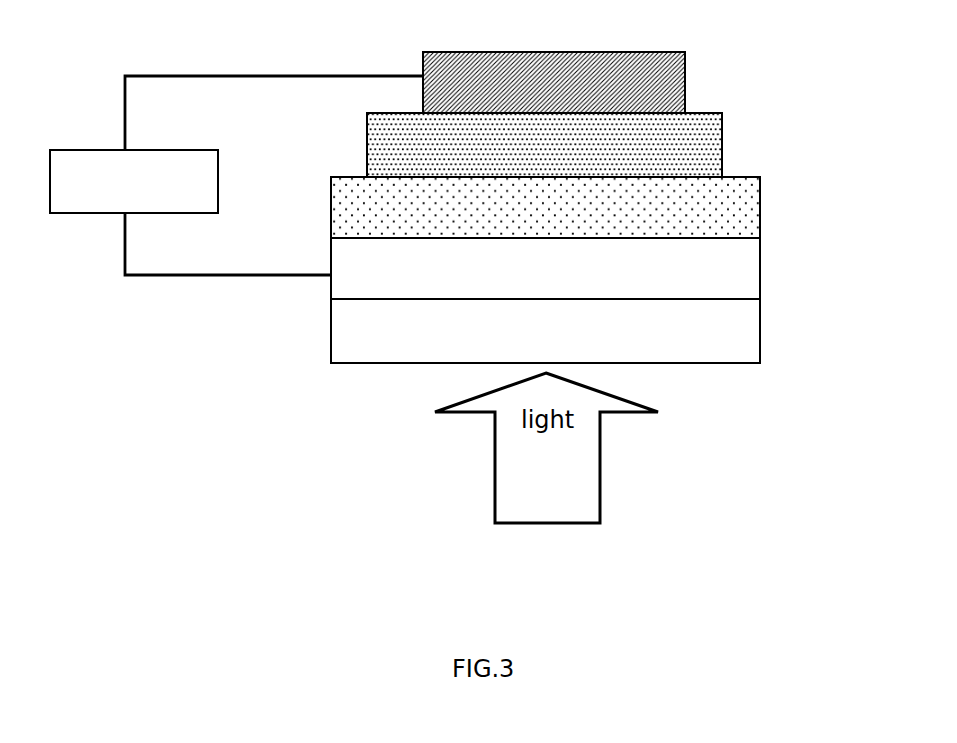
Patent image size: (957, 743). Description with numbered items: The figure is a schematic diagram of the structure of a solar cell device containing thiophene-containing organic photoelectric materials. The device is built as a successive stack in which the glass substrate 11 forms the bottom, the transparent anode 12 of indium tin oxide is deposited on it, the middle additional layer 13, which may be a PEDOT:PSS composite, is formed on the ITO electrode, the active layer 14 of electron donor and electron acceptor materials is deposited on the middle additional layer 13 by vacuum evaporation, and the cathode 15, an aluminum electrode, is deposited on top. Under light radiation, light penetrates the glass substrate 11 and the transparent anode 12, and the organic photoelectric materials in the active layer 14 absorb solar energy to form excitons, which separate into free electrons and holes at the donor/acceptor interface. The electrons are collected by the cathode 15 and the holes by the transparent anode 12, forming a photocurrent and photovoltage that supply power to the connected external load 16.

The glass substrate 11 is at (744, 346).
The transparent anode 12 is at (738, 277).
The middle additional layer 13 is at (743, 230).
The active layer 14 is at (705, 150).
The cathode 15 is at (685, 52).
The external load 16 is at (106, 172).